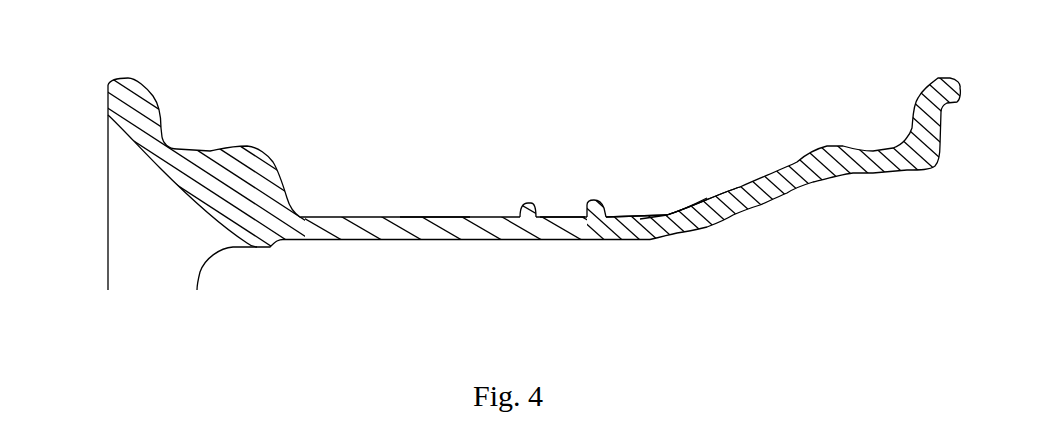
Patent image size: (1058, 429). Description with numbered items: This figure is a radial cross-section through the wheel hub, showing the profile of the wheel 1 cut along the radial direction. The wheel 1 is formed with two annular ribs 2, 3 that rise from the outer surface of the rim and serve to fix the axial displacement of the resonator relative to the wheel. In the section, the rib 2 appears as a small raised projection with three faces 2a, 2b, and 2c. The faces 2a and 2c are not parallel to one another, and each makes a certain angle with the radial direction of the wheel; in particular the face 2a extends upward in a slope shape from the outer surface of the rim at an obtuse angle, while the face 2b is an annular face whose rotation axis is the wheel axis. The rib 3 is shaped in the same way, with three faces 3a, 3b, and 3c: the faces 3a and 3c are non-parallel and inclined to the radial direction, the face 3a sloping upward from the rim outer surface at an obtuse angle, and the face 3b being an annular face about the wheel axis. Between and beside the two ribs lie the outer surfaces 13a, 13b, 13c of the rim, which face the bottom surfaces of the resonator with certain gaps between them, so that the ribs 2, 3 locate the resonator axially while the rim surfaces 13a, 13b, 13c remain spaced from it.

The wheel 1 is at (108, 88).
The rib 2 is at (377, 230).
The face 2a is at (520, 217).
The face 2b is at (533, 202).
The face 2c is at (537, 215).
The rib 3 is at (767, 214).
The face 3a is at (605, 217).
The face 3b is at (587, 199).
The face 3c is at (587, 213).
The outer surface of the rim 13a is at (447, 217).
The outer surface of the rim 13b is at (563, 222).
The outer surface of the rim 13c is at (668, 213).